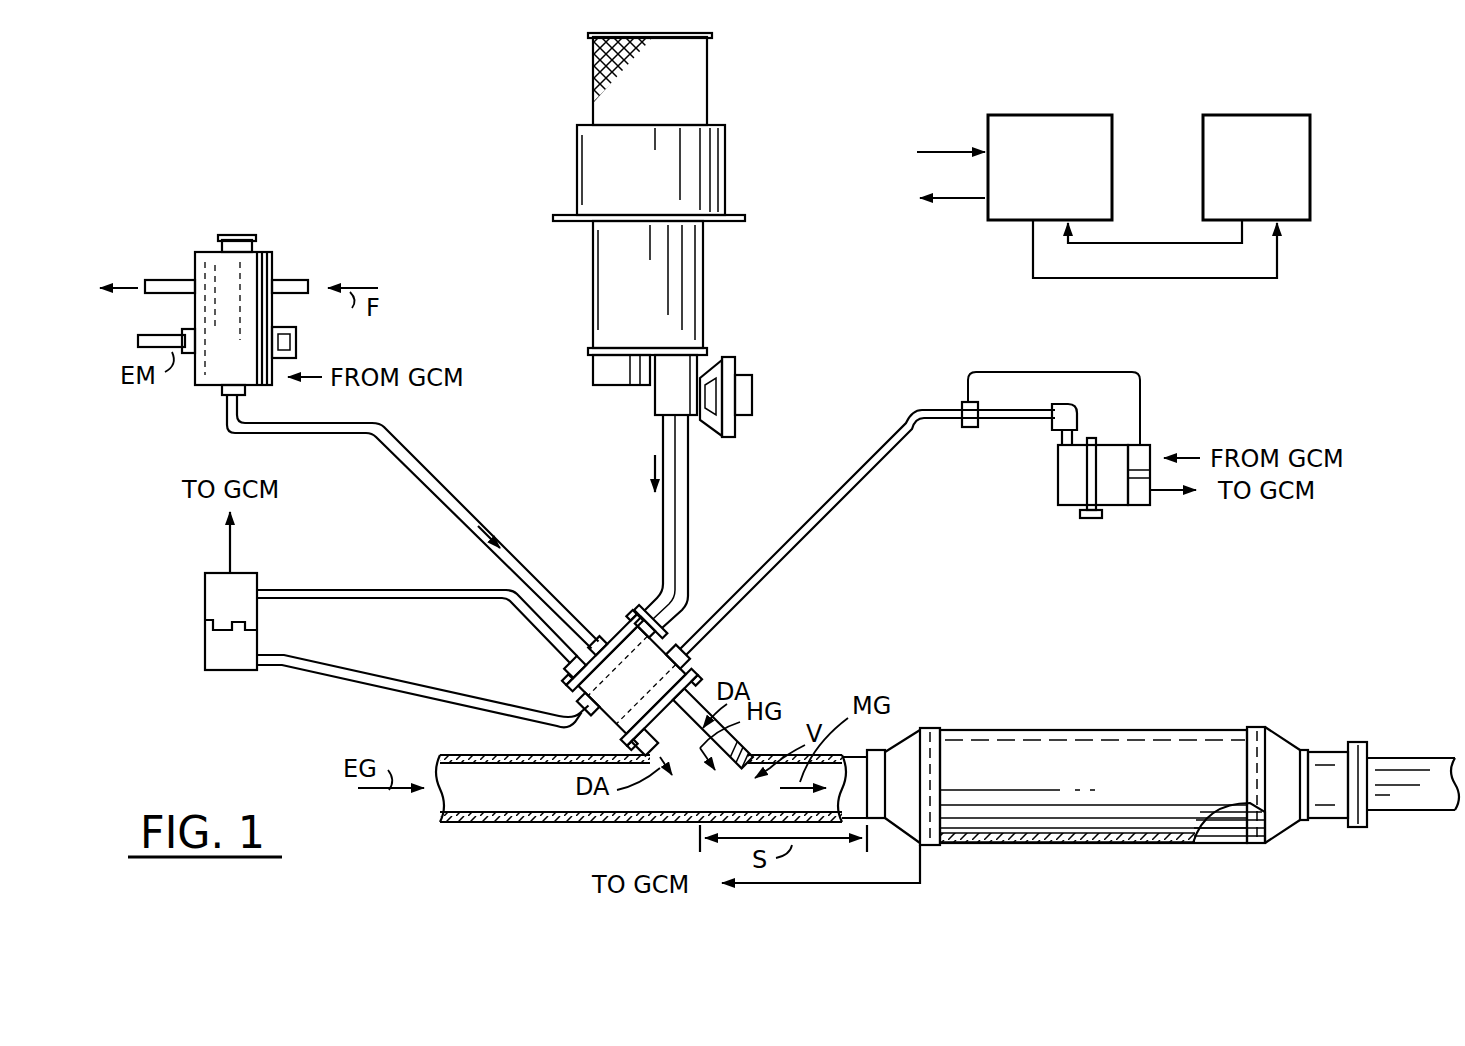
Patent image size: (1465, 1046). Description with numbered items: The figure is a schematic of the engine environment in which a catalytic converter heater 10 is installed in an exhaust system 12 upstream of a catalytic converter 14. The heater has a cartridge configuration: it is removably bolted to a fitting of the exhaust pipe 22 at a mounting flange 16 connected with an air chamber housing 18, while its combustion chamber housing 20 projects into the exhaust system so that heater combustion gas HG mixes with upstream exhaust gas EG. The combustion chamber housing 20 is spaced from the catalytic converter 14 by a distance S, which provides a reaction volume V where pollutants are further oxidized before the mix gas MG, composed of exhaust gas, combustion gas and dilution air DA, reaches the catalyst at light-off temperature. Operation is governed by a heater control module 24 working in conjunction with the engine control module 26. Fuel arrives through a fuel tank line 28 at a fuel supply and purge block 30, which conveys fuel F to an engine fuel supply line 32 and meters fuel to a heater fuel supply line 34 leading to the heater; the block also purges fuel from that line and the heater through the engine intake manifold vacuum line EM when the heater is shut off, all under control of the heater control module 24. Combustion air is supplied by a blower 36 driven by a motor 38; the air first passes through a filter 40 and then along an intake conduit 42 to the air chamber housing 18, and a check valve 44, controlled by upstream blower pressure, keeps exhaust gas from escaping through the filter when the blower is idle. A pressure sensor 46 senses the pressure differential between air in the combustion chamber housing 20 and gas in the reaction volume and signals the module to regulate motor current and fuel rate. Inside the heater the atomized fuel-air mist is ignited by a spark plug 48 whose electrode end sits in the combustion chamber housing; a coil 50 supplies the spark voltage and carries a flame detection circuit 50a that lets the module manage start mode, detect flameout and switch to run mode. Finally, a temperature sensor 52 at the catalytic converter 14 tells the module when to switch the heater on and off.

The catalytic converter heater 10 is at (604, 614).
The exhaust system 12 is at (593, 826).
The catalytic converter 14 is at (1125, 728).
The mounting flange 16 is at (705, 670).
The air chamber housing 18 is at (580, 686).
The combustion chamber housing 20 is at (700, 700).
The exhaust pipe 22 is at (677, 822).
The heater control module (GCM) 24 is at (1115, 170).
The engine control module (ECM) 26 is at (1312, 158).
The fuel tank line 28 is at (295, 278).
The fuel supply and purge block (FS/PB) 30 is at (265, 250).
The engine fuel supply line 32 is at (162, 278).
The heater fuel supply line 34 is at (425, 465).
The blower 36 is at (727, 165).
The motor 38 is at (703, 270).
The filter 40 is at (708, 83).
The intake conduit 42 is at (690, 497).
The check valve 44 is at (737, 357).
The pressure sensor 46 is at (205, 642).
The spark plug 48 is at (693, 605).
The coil 50 is at (1115, 505).
The flame detection circuit 50a is at (1053, 372).
The temperature sensor 52 is at (922, 862).